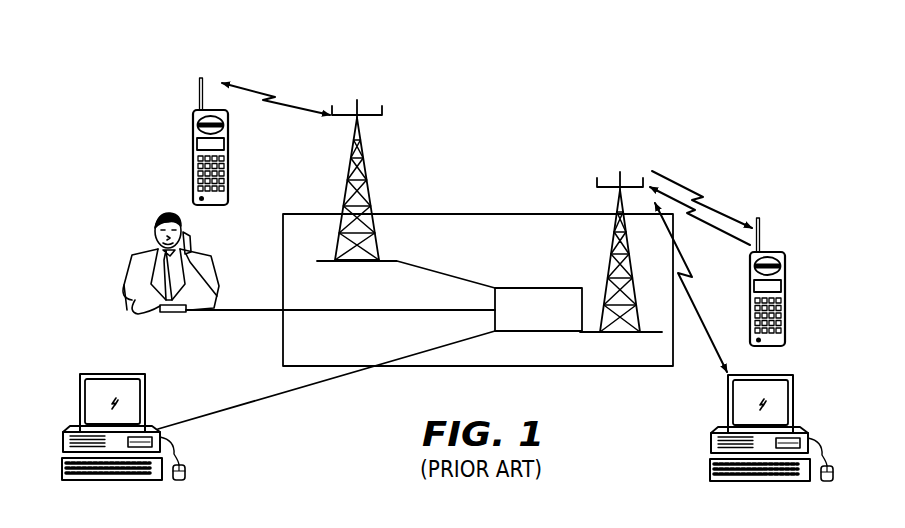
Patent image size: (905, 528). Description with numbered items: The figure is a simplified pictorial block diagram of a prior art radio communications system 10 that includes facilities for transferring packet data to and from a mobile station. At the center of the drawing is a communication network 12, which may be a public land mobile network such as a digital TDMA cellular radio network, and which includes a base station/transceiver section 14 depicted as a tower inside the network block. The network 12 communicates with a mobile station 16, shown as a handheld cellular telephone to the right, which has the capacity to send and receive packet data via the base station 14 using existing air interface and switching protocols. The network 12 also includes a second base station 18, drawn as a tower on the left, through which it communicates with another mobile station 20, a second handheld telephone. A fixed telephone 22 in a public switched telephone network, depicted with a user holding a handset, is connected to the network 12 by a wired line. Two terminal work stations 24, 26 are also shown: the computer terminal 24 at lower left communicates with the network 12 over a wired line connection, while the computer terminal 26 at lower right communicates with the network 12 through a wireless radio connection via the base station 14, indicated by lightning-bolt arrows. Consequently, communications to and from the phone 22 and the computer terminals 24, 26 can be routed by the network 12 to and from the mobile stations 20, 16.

The system 10 is at (156, 53).
The communication network 12 is at (553, 366).
The base station/transceiver section 14 is at (611, 244).
The mobile station 16 is at (786, 264).
The second base station 18 is at (367, 170).
The mobile station 20 is at (193, 118).
The fixed telephone 22 is at (172, 313).
The terminal work station 24 is at (146, 389).
The terminal work station 26 is at (727, 393).